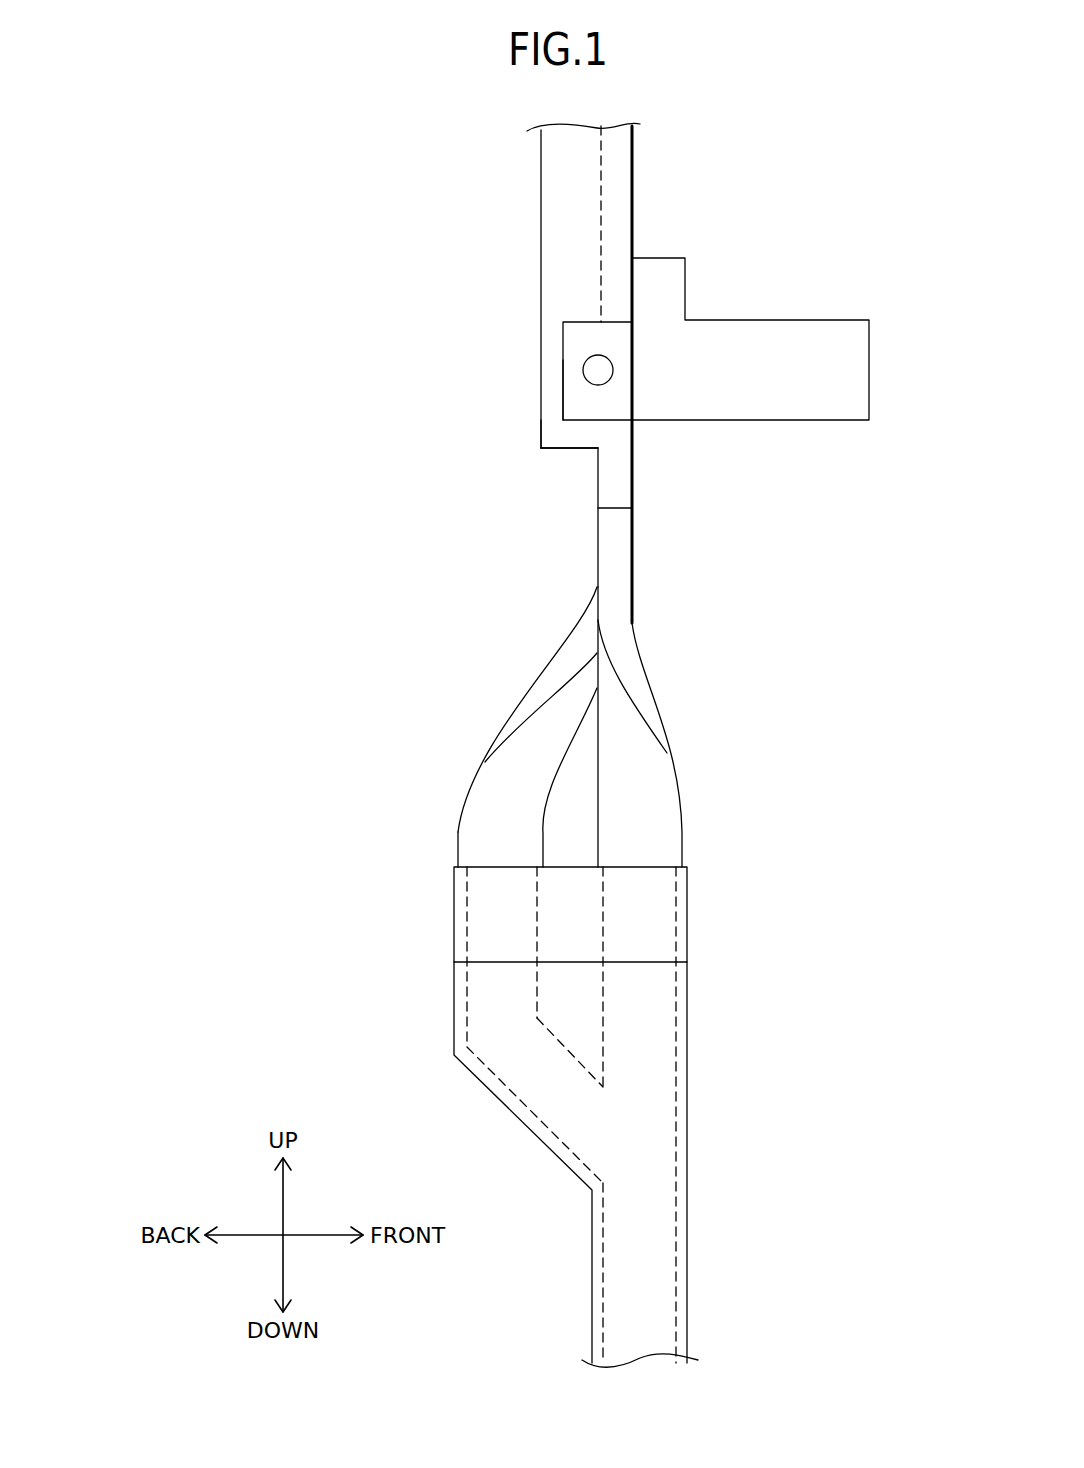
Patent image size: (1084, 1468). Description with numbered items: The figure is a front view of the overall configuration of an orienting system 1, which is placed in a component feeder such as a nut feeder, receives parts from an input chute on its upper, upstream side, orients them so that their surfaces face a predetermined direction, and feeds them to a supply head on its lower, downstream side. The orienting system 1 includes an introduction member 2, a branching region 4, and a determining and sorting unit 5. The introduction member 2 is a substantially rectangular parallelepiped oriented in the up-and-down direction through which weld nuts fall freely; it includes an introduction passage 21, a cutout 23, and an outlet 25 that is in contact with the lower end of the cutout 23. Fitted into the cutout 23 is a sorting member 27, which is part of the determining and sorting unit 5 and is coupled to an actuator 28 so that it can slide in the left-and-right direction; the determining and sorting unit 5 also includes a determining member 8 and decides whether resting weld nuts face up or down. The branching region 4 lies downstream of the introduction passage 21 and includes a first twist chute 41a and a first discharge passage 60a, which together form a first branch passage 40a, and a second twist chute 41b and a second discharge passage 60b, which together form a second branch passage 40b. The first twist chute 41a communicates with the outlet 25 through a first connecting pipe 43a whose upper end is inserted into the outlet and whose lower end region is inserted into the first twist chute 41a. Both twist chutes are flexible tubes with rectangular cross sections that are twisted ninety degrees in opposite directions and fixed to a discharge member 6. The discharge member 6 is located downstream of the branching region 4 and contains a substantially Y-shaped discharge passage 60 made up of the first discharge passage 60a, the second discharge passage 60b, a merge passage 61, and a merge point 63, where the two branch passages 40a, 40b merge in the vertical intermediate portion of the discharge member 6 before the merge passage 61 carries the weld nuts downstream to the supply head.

The orienting system 1 is at (446, 193).
The introduction member 2 is at (646, 191).
The introduction passage 21 is at (608, 268).
The cutout 23 is at (563, 402).
The outlet 25 is at (562, 437).
The sorting member 27 is at (585, 339).
The actuator 28 is at (598, 370).
The determining and sorting unit 5 is at (758, 216).
The determining member 8 is at (840, 320).
The first connecting pipe 43a is at (622, 472).
The branching region 4 is at (745, 680).
The first branch passage 40a is at (695, 845).
The second branch passage 40b is at (448, 842).
The first twist chute 41a is at (650, 787).
The second twist chute 41b is at (507, 763).
The discharge member 6 is at (722, 1131).
The discharge passage 60 is at (690, 1000).
The first discharge passage 60a is at (648, 1050).
The second discharge passage 60b is at (497, 1005).
The merge passage 61 is at (647, 1287).
The merge point 63 is at (633, 1150).